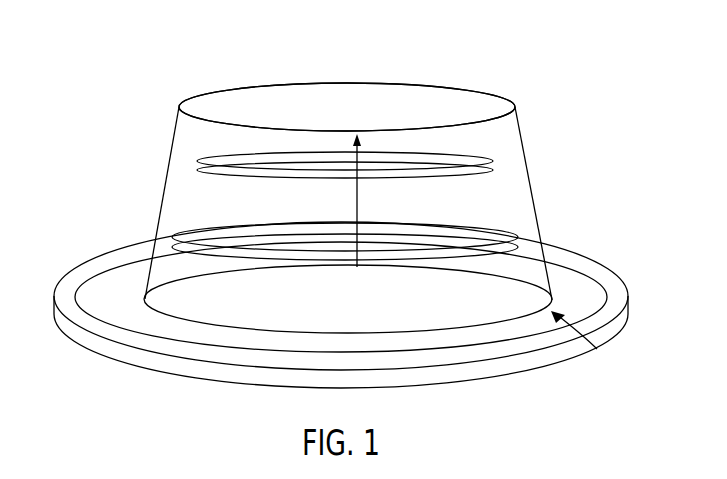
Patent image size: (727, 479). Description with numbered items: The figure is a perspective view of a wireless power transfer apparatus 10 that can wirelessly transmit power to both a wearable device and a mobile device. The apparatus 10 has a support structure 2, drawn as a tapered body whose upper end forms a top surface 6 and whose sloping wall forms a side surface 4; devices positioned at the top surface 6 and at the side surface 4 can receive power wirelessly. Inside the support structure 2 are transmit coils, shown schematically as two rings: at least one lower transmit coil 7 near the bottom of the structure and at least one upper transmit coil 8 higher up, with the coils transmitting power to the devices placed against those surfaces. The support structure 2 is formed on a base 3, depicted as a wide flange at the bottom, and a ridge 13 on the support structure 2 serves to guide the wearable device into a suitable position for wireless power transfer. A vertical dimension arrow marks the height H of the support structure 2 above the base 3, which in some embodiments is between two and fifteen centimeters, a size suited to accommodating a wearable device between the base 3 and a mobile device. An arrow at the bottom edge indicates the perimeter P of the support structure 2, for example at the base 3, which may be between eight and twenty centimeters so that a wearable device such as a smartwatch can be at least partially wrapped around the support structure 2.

The wireless power transfer apparatus 10 is at (118, 52).
The support structure 2 is at (516, 108).
The top surface 6 is at (415, 95).
The side surface 4 is at (530, 186).
The upper transmit coil 8 is at (197, 161).
The lower transmit coil 7 is at (175, 238).
The base 3 is at (627, 325).
The ridge 13 is at (68, 292).
The height H is at (357, 208).
The perimeter P is at (576, 343).